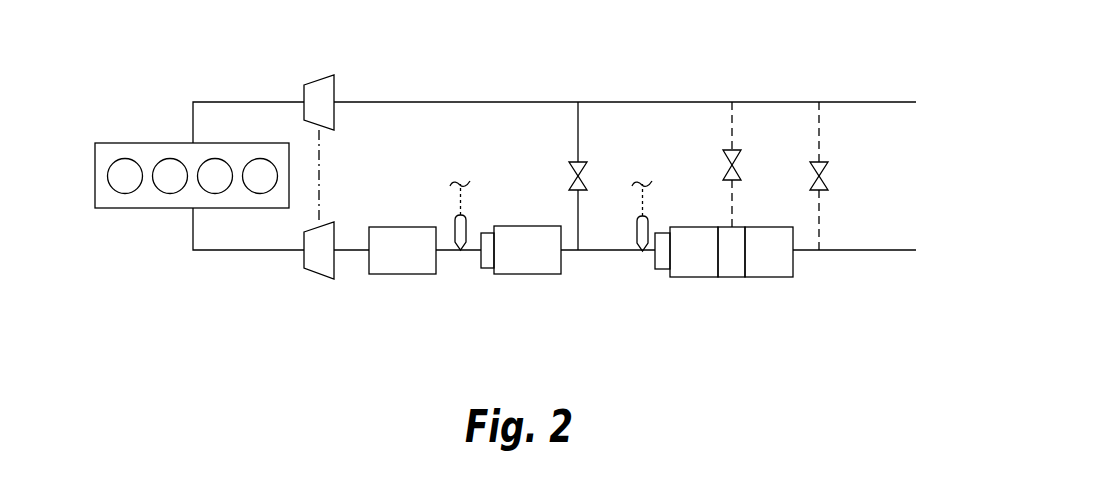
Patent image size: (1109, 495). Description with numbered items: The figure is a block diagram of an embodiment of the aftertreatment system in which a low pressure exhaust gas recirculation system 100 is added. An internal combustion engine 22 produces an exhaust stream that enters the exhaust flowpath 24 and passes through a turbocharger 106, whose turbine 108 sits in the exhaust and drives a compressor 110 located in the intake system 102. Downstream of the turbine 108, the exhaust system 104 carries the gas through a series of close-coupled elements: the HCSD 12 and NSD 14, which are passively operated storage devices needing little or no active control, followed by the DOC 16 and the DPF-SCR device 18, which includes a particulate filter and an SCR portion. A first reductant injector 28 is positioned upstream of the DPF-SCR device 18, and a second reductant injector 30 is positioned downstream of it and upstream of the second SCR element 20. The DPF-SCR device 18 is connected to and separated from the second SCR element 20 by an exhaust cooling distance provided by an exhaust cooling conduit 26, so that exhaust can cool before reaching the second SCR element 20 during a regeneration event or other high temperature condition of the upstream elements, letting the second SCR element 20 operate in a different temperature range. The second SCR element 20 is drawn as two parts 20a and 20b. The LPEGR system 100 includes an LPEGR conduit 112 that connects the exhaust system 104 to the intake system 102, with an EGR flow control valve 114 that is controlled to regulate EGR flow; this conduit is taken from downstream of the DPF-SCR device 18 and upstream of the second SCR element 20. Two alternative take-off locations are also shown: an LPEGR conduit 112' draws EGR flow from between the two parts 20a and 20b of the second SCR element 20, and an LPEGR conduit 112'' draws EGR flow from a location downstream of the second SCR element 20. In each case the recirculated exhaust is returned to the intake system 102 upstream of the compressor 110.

The low pressure exhaust gas recirculation system 100 is at (868, 147).
The intake system 102 is at (503, 94).
The exhaust system 104 is at (694, 333).
The turbocharger 106 is at (359, 183).
The turbine 108 is at (312, 272).
The compressor 110 is at (313, 80).
The LPEGR conduit 112 is at (584, 176).
The LPEGR conduit 112' is at (717, 143).
The LPEGR conduit 112'' is at (826, 149).
The EGR flow control valve 114 is at (569, 178).
The HCSD 12 is at (399, 281).
The NSD 14 is at (399, 281).
The DOC 16 is at (400, 275).
The DPF-SCR device 18 is at (521, 250).
The second SCR element 20 is at (718, 286).
The first part of second SCR element 20a is at (709, 262).
The second part of second SCR element 20b is at (783, 262).
The internal combustion engine 22 is at (167, 215).
The exhaust flowpath 24 is at (833, 253).
The exhaust cooling conduit 26 is at (575, 253).
The first reductant injector 28 is at (455, 225).
The second reductant injector 30 is at (637, 222).